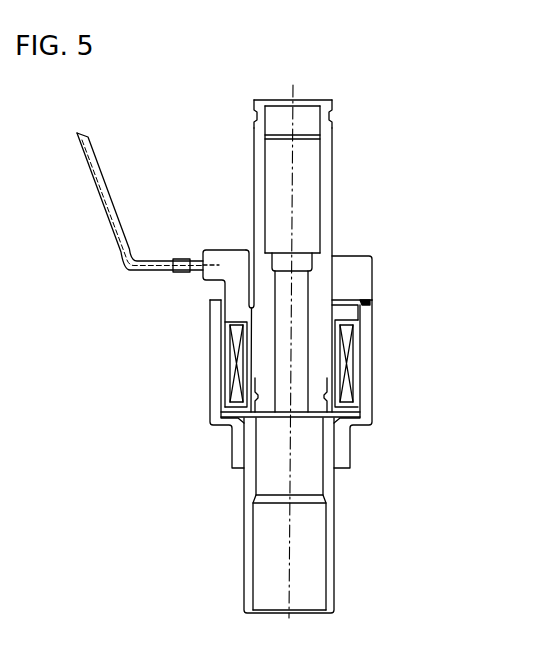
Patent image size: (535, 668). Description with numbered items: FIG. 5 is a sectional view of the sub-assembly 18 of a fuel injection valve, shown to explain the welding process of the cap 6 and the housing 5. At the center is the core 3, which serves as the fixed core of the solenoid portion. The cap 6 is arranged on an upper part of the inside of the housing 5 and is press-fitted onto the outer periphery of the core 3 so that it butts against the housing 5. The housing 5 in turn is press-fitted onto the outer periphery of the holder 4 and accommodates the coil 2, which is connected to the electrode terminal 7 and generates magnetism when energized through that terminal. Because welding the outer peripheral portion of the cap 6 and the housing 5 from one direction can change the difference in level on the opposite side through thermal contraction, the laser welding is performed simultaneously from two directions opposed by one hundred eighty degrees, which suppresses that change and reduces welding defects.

The coil 2 is at (226, 360).
The core 3 is at (331, 182).
The holder 4 is at (334, 538).
The housing 5 is at (370, 385).
The cap 6 is at (353, 270).
The electrode terminal 7 is at (123, 252).
The sub-assembly 18 is at (242, 137).